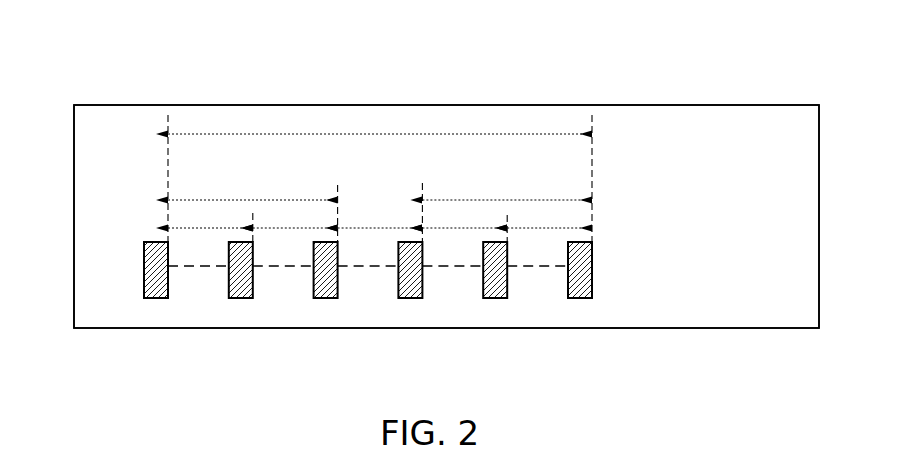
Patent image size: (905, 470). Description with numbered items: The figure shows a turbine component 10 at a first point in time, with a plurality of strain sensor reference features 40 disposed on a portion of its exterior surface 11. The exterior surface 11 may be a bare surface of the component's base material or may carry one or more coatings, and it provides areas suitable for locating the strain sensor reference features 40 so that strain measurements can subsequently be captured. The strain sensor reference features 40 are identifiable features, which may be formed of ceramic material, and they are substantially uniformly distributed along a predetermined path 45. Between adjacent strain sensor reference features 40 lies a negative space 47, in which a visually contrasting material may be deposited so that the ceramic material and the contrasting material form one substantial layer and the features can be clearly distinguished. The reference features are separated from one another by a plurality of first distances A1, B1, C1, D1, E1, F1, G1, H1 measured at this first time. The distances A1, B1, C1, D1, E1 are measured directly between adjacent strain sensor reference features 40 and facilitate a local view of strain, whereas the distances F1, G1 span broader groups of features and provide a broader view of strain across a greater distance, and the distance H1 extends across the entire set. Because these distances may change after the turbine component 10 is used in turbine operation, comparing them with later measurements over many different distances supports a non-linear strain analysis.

The turbine component 10 is at (116, 70).
The exterior surface 11 is at (772, 161).
The strain sensor reference features 40 is at (146, 299).
The negative space 47 is at (181, 267).
The predetermined path 45 is at (520, 267).
The first distance A1 is at (218, 230).
The first distance B1 is at (292, 230).
The first distance C1 is at (381, 230).
The first distance D1 is at (460, 230).
The first distance E1 is at (556, 230).
The first distance F1 is at (254, 198).
The first distance G1 is at (507, 198).
The first distance H1 is at (378, 137).